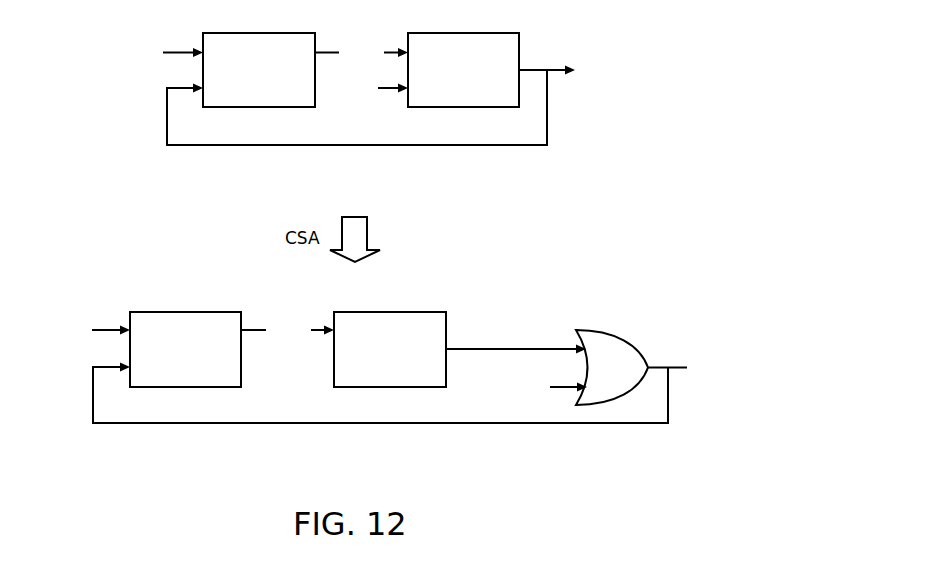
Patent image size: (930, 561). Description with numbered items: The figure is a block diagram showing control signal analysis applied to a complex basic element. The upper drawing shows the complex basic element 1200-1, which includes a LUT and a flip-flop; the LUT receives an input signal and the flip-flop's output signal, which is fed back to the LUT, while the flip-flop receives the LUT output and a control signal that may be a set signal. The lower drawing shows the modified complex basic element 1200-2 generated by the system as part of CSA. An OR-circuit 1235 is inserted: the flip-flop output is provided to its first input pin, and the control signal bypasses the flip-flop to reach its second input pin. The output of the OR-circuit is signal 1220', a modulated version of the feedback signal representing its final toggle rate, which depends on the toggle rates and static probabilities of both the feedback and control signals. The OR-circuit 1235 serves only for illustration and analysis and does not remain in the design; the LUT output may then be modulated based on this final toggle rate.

The complex basic element 1200-1 is at (562, 33).
The modified complex basic element 1200-2 is at (560, 310).
The signal 1220' is at (390, 408).
The OR-circuit 1235 is at (612, 367).